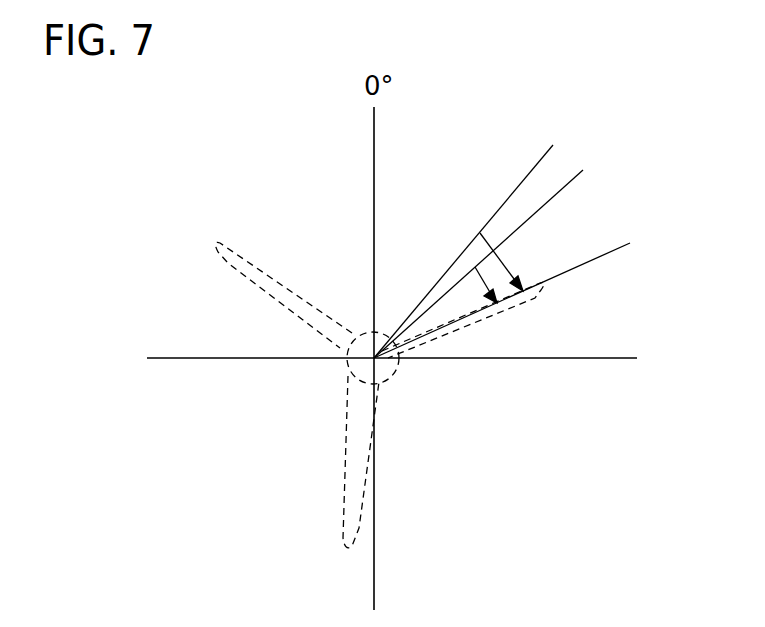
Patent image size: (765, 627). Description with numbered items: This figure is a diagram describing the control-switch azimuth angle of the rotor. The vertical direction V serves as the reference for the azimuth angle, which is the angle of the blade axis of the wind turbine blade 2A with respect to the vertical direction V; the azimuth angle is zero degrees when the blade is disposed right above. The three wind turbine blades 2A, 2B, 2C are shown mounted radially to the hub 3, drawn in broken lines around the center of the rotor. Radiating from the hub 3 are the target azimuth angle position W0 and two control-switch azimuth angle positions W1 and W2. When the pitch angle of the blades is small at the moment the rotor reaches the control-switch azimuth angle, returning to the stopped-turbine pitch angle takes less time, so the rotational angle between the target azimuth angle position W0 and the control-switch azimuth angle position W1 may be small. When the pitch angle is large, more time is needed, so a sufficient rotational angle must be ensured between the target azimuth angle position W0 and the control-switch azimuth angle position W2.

The vertical direction V is at (374, 138).
The control-switch azimuth angle position W2 is at (532, 170).
The control-switch azimuth angle position W1 is at (565, 187).
The target azimuth angle position W0 is at (595, 259).
The hub 3 is at (350, 376).
The wind turbine blade 2A is at (481, 326).
The wind turbine blade 2B is at (230, 278).
The wind turbine blade 2C is at (340, 500).